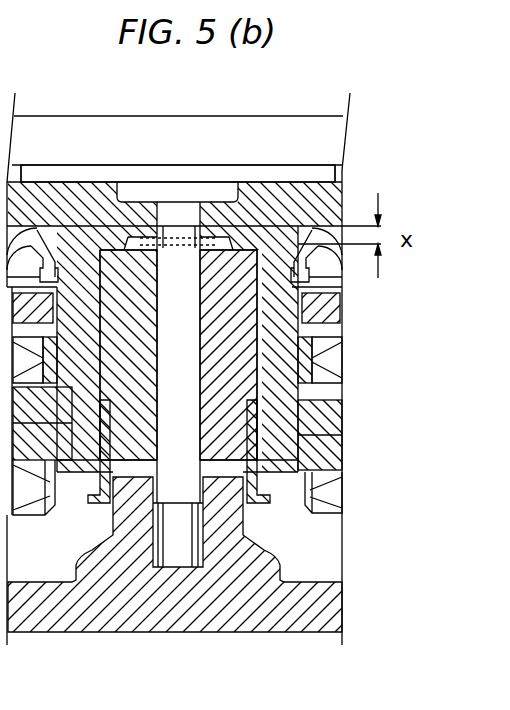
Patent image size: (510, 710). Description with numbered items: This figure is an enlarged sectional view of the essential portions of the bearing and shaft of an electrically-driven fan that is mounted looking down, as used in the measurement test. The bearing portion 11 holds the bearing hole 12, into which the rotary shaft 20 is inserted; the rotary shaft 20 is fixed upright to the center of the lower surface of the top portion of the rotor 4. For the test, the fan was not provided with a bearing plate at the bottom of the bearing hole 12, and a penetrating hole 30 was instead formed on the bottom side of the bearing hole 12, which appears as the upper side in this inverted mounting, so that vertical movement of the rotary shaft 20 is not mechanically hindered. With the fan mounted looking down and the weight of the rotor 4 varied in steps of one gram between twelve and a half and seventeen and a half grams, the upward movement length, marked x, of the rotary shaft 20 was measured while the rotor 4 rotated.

The penetrating hole 30 is at (200, 205).
The bearing hole 12 is at (192, 352).
The bearing portion 11 is at (230, 369).
The rotary shaft 20 is at (183, 433).
The rotor 4 is at (258, 632).